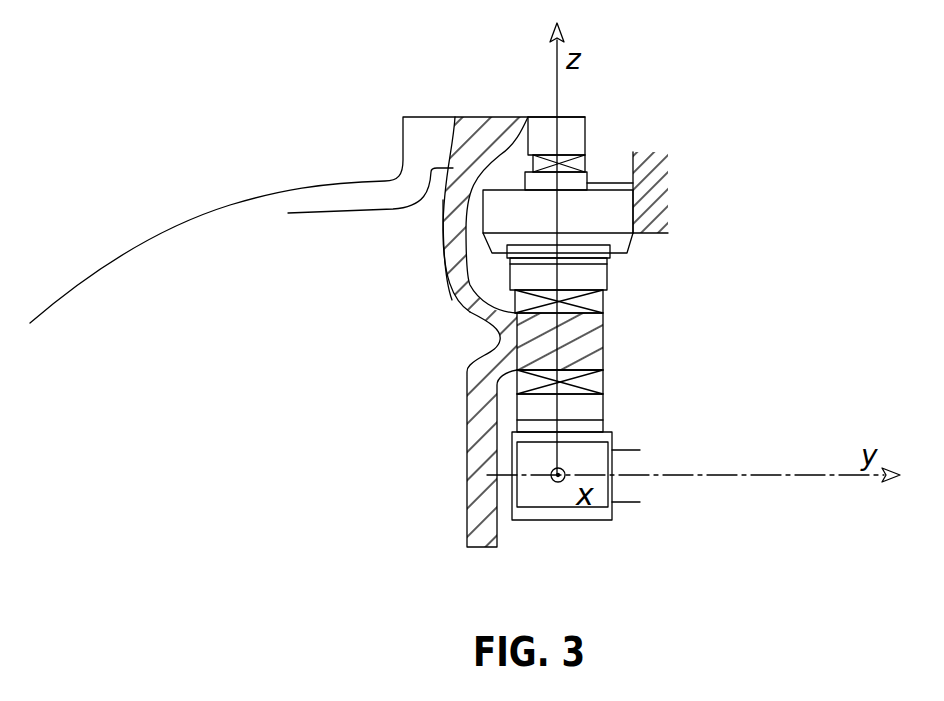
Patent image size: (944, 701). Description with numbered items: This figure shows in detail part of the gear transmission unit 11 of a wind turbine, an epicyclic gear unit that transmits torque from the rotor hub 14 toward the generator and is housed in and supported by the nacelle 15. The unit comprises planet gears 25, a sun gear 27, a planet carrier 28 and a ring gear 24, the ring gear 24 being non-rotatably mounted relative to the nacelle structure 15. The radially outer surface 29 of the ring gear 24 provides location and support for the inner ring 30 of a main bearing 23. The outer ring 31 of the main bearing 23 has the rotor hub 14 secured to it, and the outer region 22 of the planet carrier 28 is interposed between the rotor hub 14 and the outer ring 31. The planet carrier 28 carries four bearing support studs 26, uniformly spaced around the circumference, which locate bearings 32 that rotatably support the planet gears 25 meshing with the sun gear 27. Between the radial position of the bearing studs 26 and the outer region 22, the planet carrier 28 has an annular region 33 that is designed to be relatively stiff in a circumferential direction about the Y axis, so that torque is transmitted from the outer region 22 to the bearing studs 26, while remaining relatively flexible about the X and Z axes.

The gear transmission unit 11 is at (782, 122).
The rotor hub 14 is at (303, 195).
The nacelle 15 is at (652, 185).
The outer region of the planet carrier 22 is at (480, 127).
The main bearing 23 is at (581, 167).
The ring gear 24 is at (593, 215).
The planet gears 25 is at (600, 275).
The bearing support studs 26 is at (580, 338).
The sun gear 27 is at (533, 493).
The planet carrier 28 is at (443, 280).
The radially outer surface of the ring gear 29 is at (617, 187).
The inner ring of the main bearing 30 is at (588, 180).
The outer ring of the main bearing 31 is at (537, 127).
The bearings 32 is at (597, 302).
The annular region of the planet carrier 33 is at (446, 214).